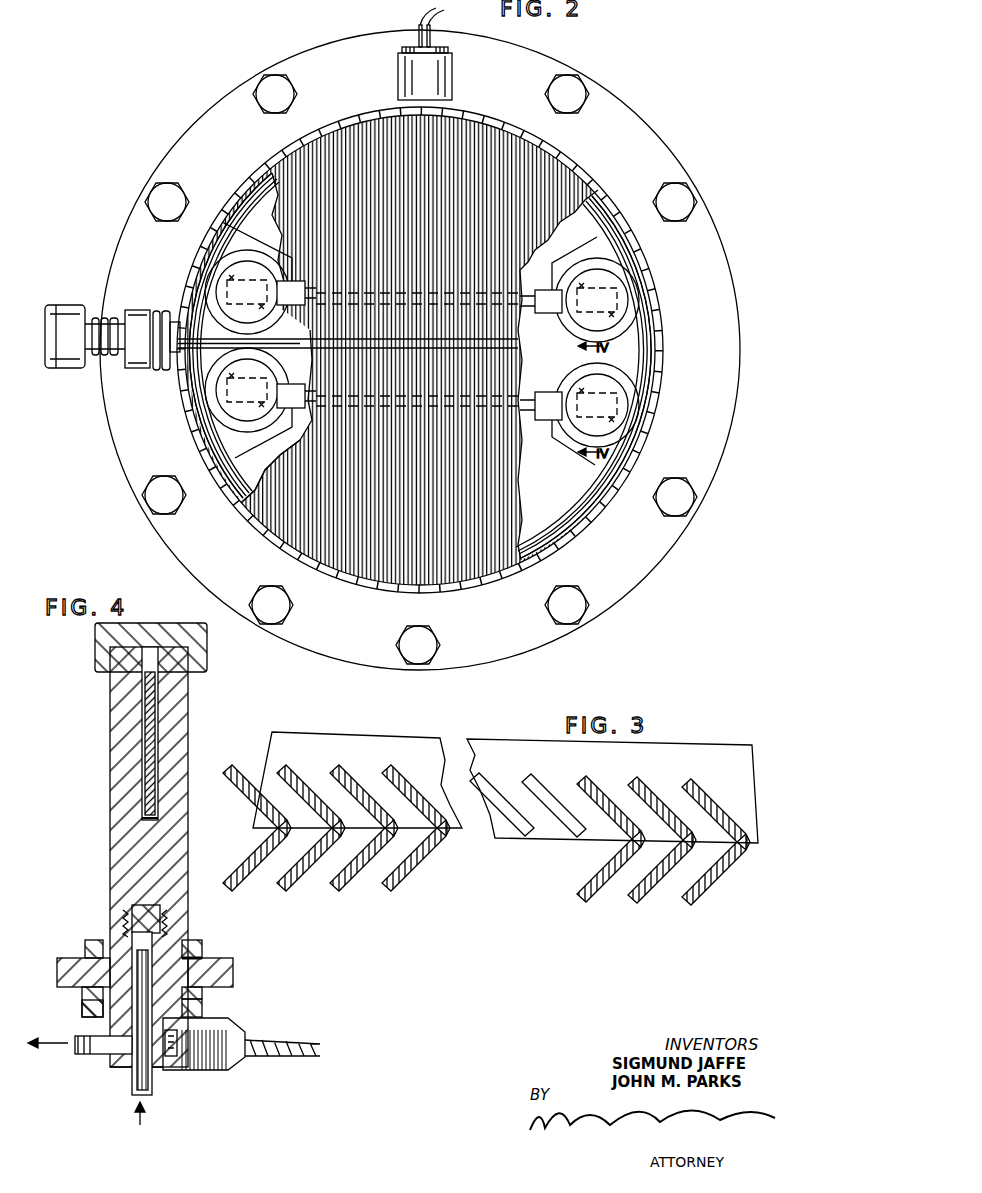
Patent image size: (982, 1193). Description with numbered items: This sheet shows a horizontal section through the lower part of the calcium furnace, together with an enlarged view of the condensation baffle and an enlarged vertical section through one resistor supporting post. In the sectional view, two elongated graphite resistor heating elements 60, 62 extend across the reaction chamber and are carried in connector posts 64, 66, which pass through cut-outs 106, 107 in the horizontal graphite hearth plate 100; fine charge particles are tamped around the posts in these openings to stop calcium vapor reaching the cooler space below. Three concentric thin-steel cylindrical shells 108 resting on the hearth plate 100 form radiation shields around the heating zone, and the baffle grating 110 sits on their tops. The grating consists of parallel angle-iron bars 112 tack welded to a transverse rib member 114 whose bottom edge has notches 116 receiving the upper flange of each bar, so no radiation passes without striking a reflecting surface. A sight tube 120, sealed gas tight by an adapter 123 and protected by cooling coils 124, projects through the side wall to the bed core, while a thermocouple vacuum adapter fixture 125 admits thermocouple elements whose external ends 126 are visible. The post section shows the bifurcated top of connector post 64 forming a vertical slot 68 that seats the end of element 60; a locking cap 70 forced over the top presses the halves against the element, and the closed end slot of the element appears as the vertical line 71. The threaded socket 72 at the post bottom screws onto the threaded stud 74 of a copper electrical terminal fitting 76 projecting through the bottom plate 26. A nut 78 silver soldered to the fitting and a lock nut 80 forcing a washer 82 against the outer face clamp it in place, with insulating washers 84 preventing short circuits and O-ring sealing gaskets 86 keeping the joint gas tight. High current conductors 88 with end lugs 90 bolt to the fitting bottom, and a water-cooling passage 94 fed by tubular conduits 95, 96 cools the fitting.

In FIG. 4, the bottom plate 26 is at (236, 980).
In FIG. 2, the resistor heating element 60 is at (528, 410).
In FIG. 4, the resistor heating element 60 is at (140, 725).
In FIG. 2, the resistor heating element 62 is at (528, 300).
In FIG. 2, the connector post 64 is at (208, 434).
In FIG. 4, the connector post 64 is at (112, 880).
In FIG. 2, the connector post 66 is at (205, 252).
In FIG. 4, the vertical slot 68 is at (138, 822).
In FIG. 4, the locking cap 70 is at (100, 638).
In FIG. 4, the vertical line 71 is at (150, 645).
In FIG. 4, the threaded socket 72 is at (128, 918).
In FIG. 4, the threaded stud 74 is at (160, 925).
In FIG. 4, the electrical terminal fitting 76 is at (118, 1068).
In FIG. 4, the nut 78 is at (196, 950).
In FIG. 4, the lock nut 80 is at (90, 1012).
In FIG. 4, the washer 82 is at (204, 1004).
In FIG. 4, the insulating washers 84 is at (86, 955).
In FIG. 4, the O-ring type sealing gaskets 86 is at (214, 975).
In FIG. 4, the high current capacity conductors 88 is at (300, 1060).
In FIG. 4, the end lugs 90 is at (250, 1055).
In FIG. 4, the water-cooling passage 94 is at (130, 1012).
In FIG. 4, the tubular conduit 95 is at (152, 1088).
In FIG. 4, the tubular conduit 96 is at (80, 1055).
In FIG. 2, the hearth plate 100 is at (280, 238).
In FIG. 2, the cut-out 106 is at (208, 318).
In FIG. 2, the cut-out 107 is at (625, 344).
In FIG. 2, the cylindrical shells 108 is at (560, 525).
In FIG. 2, the baffle grating 110 is at (522, 480).
In FIG. 3, the baffle grating 110 is at (493, 738).
In FIG. 2, the angle-iron bars 112 is at (282, 454).
In FIG. 3, the angle-iron bars 112 is at (290, 880).
In FIG. 3, the transverse rib member 114 is at (388, 745).
In FIG. 3, the notches 116 is at (590, 838).
In FIG. 2, the sight tube 120 is at (176, 368).
In FIG. 2, the adapter 123 is at (112, 360).
In FIG. 2, the cooling coils 124 is at (156, 312).
In FIG. 2, the thermocouple vacuum adapter fixture 125 is at (398, 65).
In FIG. 2, the external ends 126 is at (434, 20).